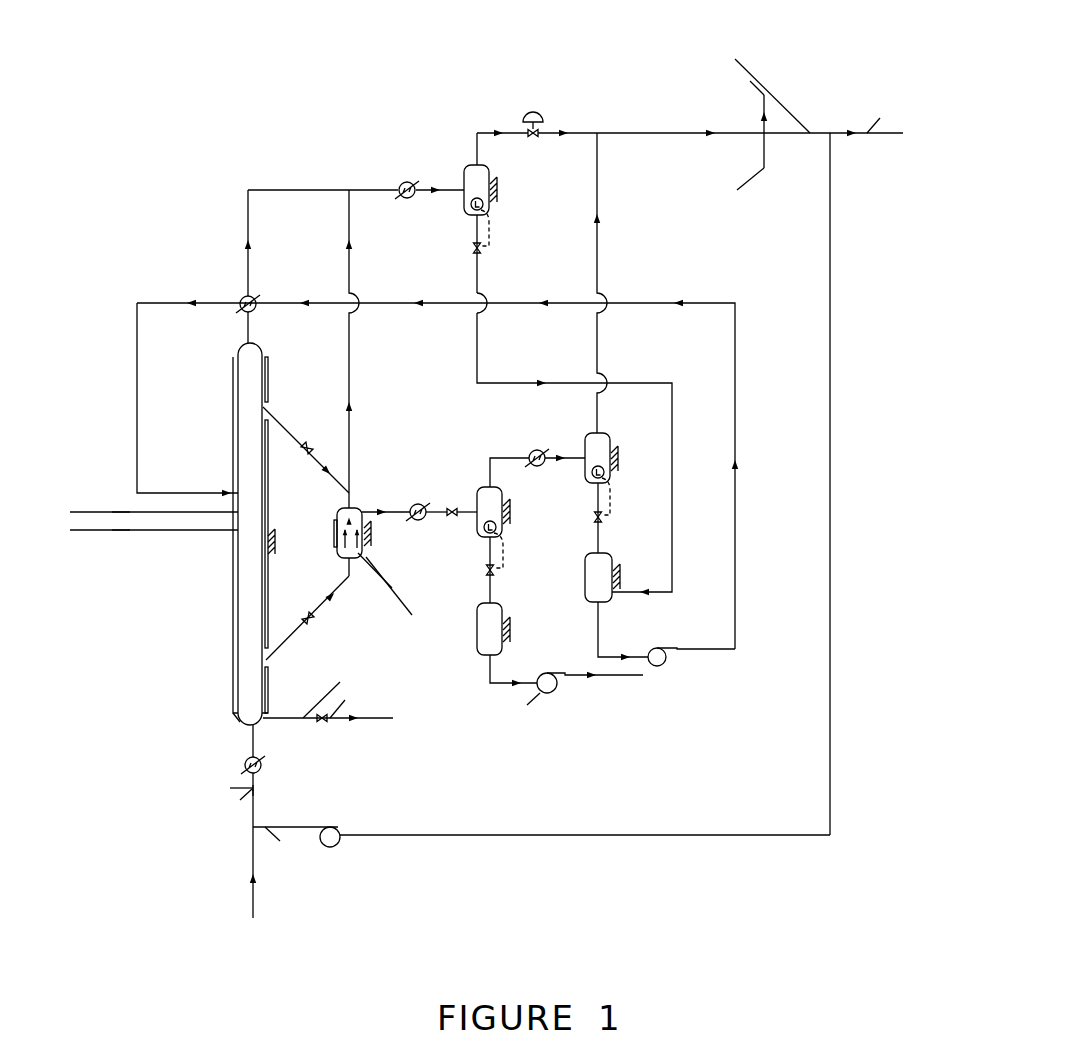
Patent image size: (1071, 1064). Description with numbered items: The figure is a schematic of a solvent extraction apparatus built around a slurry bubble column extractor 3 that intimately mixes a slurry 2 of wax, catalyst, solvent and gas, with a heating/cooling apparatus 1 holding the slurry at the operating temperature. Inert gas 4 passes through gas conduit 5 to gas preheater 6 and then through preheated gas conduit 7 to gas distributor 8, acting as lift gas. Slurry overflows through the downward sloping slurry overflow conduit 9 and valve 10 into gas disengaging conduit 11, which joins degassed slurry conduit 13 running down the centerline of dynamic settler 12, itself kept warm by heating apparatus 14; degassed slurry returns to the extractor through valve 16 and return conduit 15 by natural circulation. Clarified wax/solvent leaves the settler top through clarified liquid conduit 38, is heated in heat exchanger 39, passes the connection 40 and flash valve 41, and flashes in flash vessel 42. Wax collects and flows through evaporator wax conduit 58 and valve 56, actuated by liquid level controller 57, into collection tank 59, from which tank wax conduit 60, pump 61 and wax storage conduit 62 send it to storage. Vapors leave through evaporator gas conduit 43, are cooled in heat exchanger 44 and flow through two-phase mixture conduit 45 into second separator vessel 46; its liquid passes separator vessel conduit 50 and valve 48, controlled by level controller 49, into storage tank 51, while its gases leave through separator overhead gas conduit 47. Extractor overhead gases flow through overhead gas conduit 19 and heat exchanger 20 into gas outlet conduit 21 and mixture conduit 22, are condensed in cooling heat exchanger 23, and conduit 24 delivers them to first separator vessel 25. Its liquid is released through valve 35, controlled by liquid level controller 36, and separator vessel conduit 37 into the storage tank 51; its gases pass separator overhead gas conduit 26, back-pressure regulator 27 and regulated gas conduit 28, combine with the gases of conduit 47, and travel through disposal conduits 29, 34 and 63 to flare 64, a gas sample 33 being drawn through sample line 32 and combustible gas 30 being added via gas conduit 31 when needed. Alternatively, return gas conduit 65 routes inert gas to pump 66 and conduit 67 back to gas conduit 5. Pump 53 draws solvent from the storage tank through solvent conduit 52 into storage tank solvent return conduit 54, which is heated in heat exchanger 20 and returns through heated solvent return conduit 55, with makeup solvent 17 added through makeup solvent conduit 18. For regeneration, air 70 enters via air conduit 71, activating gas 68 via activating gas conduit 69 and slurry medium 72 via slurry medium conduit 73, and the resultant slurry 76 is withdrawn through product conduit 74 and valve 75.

The heating/cooling apparatus 1 is at (267, 378).
The slurry 2 is at (247, 597).
The slurry bubble column extractor 3 is at (263, 352).
The inert gas 4 is at (253, 891).
The gas conduit 5 is at (253, 780).
The gas preheater 6 is at (262, 767).
The preheated gas conduit 7 is at (253, 741).
The gas distributor 8 is at (252, 715).
The slurry overflow conduit 9 is at (275, 417).
The valve 10 is at (312, 447).
The gas disengaging conduit 11 is at (352, 335).
The dynamic settler 12 is at (412, 615).
The degassed slurry conduit 13 is at (392, 588).
The heating apparatus 14 is at (383, 563).
The return conduit 15 is at (282, 645).
The valve 16 is at (313, 625).
The makeup solvent 17 is at (139, 512).
The makeup solvent conduit 18 is at (112, 512).
The overhead gas conduit 19 is at (250, 334).
The heat exchanger 20 is at (252, 310).
The gas outlet conduit 21 is at (250, 223).
The mixture conduit 22 is at (375, 190).
The cooling heat exchanger 23 is at (401, 183).
The conduit 24 is at (447, 188).
The first separator vessel 25 is at (493, 169).
The separator overhead gas conduit 26 is at (477, 133).
The back-pressure regulator 27 is at (540, 122).
The regulated gas conduit 28 is at (578, 133).
The disposal conduit 29 is at (613, 133).
The combustible gas 30 is at (764, 155).
The gas conduit 31 is at (737, 190).
The sample line 32 is at (764, 102).
The gas sample 33 is at (750, 81).
The disposal conduit 34 is at (735, 59).
The valve 35 is at (478, 256).
The liquid level controller 36 is at (483, 209).
The separator vessel conduit 37 is at (480, 349).
The clarified liquid conduit 38 is at (363, 510).
The heat exchanger 39 is at (418, 502).
The line 40 is at (438, 513).
The flash valve 41 is at (452, 516).
The flash vessel 42 is at (503, 490).
The evaporator gas conduit 43 is at (507, 458).
The heat exchanger 44 is at (531, 452).
The two-phase mixture conduit 45 is at (570, 457).
The second separator vessel 46 is at (610, 433).
The separator overhead gas conduit 47 is at (600, 343).
The valve 48 is at (602, 525).
The level controller 49 is at (607, 477).
The separator vessel conduit 50 is at (600, 545).
The storage tank 51 is at (610, 597).
The solvent conduit 52 is at (600, 635).
The pump 53 is at (667, 665).
The storage tank solvent return conduit 54 is at (735, 345).
The heated solvent return conduit 55 is at (137, 399).
The valve 56 is at (492, 577).
The liquid level controller 57 is at (500, 529).
The evaporator wax conduit 58 is at (490, 595).
The collection tank 59 is at (497, 650).
The tank wax conduit 60 is at (487, 668).
The pump 61 is at (527, 705).
The wax storage conduit 62 is at (625, 675).
The disposal conduit 63 is at (880, 118).
The flare 64 is at (836, 133).
The return gas conduit 65 is at (832, 158).
The pump 66 is at (335, 844).
The conduit 67 is at (280, 841).
The activating gas 68 is at (253, 788).
The activating gas conduit 69 is at (253, 788).
The air 70 is at (230, 788).
The air conduit 71 is at (240, 800).
The slurry medium 72 is at (139, 530).
The slurry medium conduit 73 is at (112, 530).
The product conduit 74 is at (340, 682).
The valve 75 is at (345, 700).
The resultant slurry 76 is at (344, 718).